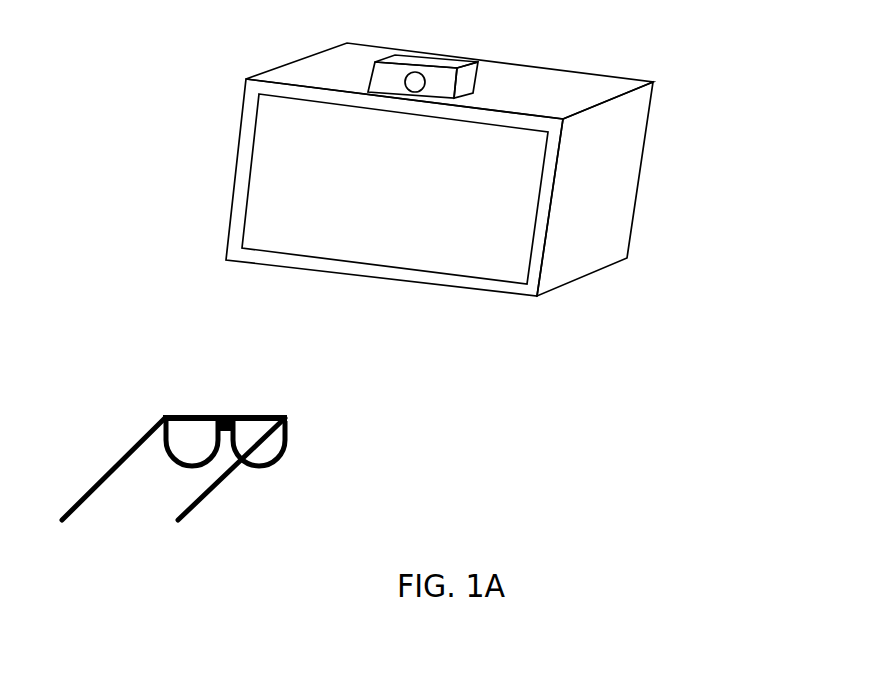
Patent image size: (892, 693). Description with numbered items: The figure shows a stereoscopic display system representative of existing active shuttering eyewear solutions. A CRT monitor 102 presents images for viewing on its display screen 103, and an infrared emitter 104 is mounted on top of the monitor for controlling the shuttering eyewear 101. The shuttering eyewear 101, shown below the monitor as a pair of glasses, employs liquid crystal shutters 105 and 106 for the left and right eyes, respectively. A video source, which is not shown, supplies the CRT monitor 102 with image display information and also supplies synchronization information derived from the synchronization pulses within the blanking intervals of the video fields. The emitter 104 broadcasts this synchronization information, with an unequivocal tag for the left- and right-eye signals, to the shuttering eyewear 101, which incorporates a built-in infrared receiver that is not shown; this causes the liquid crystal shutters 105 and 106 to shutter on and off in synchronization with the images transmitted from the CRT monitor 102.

The shuttering eyewear 101 is at (174, 465).
The CRT monitor 102 is at (652, 233).
The display screen 103 is at (456, 225).
The infrared emitter 104 is at (332, 70).
The liquid crystal shutter 105 is at (188, 438).
The liquid crystal shutter 106 is at (252, 430).